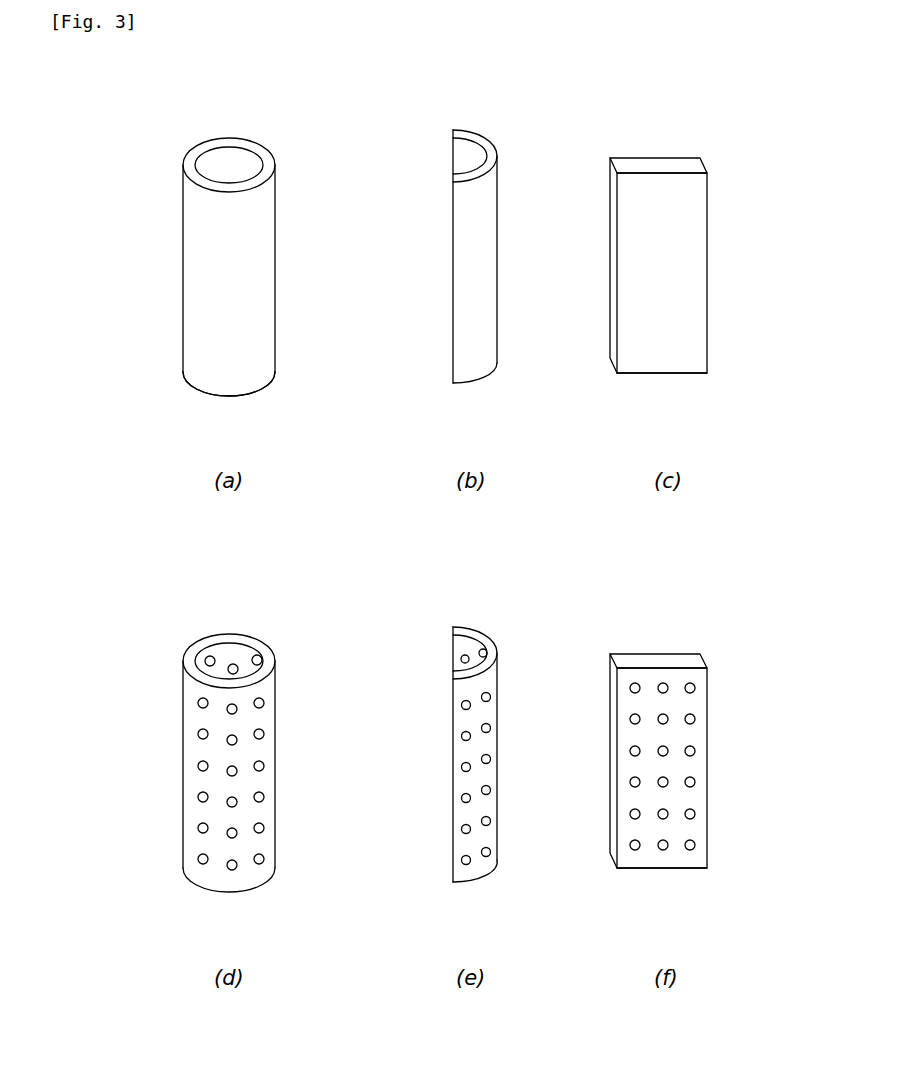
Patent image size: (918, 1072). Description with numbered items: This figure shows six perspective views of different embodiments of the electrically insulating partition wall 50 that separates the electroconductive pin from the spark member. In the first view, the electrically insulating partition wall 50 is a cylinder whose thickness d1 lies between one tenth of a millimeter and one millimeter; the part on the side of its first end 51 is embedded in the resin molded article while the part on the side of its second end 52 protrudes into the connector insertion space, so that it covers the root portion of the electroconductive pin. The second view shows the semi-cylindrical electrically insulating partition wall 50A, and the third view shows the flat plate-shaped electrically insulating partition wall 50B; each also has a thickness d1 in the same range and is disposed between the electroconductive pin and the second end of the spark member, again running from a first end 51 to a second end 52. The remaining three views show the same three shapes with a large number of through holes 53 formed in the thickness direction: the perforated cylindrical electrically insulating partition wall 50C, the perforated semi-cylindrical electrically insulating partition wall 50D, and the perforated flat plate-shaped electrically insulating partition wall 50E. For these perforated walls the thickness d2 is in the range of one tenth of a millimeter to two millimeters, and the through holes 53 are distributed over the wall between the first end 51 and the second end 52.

The electrically insulating partition wall 50 is at (283, 257).
The semi-cylindrical electrically insulating partition wall 50A is at (501, 246).
The flat plate-shaped electrically insulating partition wall 50B is at (713, 257).
The perforated cylindrical electrically insulating partition wall 50C is at (278, 644).
The perforated semi-cylindrical electrically insulating partition wall 50D is at (501, 666).
The perforated flat plate-shaped electrically insulating partition wall 50E is at (676, 647).
The first end 51 is at (188, 153).
The second end 52 is at (200, 391).
The through holes 53 is at (264, 731).
The thickness (interval) d1 is at (219, 171).
The thickness (interval) d2 is at (221, 669).